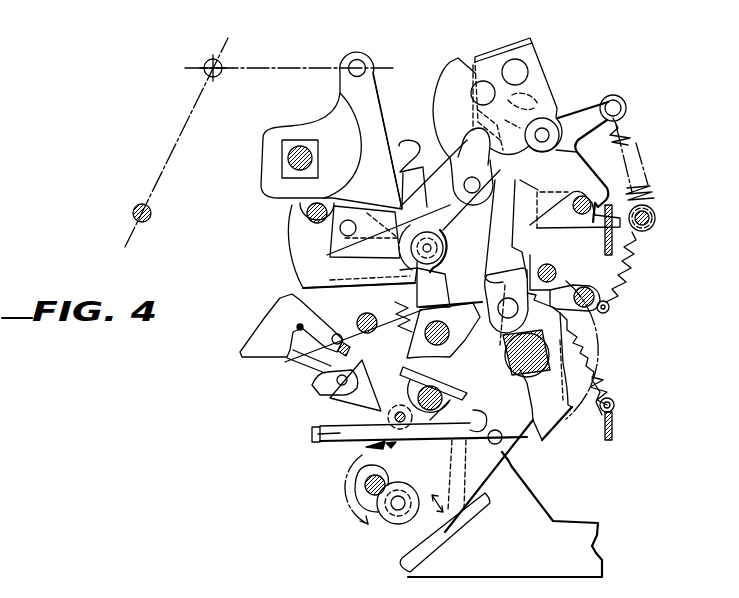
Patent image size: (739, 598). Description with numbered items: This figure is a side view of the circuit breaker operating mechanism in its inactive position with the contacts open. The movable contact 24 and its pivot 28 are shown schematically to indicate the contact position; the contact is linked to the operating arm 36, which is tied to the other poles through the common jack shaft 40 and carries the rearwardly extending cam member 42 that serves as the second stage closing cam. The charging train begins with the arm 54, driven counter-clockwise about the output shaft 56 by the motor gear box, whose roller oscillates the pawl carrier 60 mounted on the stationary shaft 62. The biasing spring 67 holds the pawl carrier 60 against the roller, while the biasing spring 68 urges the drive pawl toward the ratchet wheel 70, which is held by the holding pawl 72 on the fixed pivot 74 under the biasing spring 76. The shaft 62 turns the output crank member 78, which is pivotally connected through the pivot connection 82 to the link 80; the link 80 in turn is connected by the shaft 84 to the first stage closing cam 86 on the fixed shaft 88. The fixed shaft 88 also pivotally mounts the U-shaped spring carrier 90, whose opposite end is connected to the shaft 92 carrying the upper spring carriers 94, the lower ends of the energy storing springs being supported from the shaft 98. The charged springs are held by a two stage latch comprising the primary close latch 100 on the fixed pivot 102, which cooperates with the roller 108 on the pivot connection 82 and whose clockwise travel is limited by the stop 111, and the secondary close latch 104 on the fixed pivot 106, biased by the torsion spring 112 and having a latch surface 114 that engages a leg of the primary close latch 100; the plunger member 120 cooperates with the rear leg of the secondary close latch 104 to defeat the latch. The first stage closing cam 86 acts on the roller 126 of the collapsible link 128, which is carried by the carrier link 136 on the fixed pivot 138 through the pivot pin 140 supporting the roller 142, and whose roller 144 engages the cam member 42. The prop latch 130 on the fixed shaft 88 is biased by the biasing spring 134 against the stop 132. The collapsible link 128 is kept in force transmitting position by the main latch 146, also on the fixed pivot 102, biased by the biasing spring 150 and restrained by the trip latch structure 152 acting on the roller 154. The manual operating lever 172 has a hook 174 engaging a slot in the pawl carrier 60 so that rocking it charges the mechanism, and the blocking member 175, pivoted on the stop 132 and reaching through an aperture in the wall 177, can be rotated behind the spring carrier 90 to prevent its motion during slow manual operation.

The movable contact 24 is at (170, 150).
The pivot 28 is at (152, 208).
The operating arm 36 is at (360, 130).
The jack shaft 40 is at (295, 140).
The cam member 42 is at (377, 132).
The arm 54 is at (396, 483).
The output shaft 56 is at (368, 487).
The pawl carrier 60 is at (508, 465).
The shaft 62 is at (536, 362).
The biasing spring 67 is at (612, 375).
The biasing spring 68 is at (457, 448).
The ratchet wheel 70 is at (598, 424).
The holding pawl 72 is at (570, 287).
The pivot 74 is at (589, 287).
The biasing spring 76 is at (626, 286).
The output crank member 78 is at (597, 323).
The link 80 is at (526, 255).
The pivot connection 82 is at (512, 320).
The shaft 84 is at (476, 96).
The first stage closing cam 86 is at (483, 123).
The fixed shaft 88 is at (543, 133).
The spring carrier 90 is at (535, 45).
The shaft 92 is at (517, 48).
The upper spring carriers 94 is at (532, 66).
The shaft 98 is at (533, 92).
The primary close latch 100 is at (353, 320).
The fixed pivot 102 is at (443, 330).
The secondary close latch 104 is at (337, 440).
The fixed pivot 106 is at (401, 435).
The roller 108 is at (530, 325).
The stop 111 is at (348, 312).
The torsion spring 112 is at (383, 432).
The latch surface 114 is at (370, 383).
The plunger member 120 is at (312, 432).
The roller 126 is at (478, 203).
The collapsible link 128 is at (427, 173).
The prop latch 130 is at (575, 180).
The stop 132 is at (578, 211).
The biasing spring 134 is at (643, 154).
The carrier link 136 is at (300, 249).
The fixed pivot 138 is at (306, 212).
The pivot pin 140 is at (449, 223).
The roller 142 is at (450, 252).
The roller 144 is at (331, 231).
The main latch 146 is at (438, 279).
The biasing spring 150 is at (412, 306).
The trip latch structure 152 is at (311, 378).
The roller 154 is at (336, 398).
The manual operating lever 172 is at (518, 507).
The hook 174 is at (408, 550).
The blocking member 175 is at (575, 221).
The wall 177 is at (610, 250).